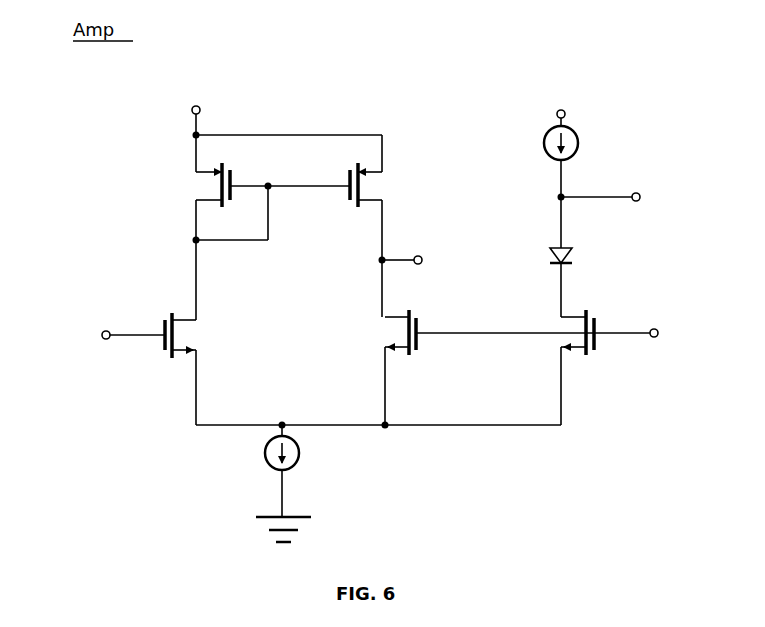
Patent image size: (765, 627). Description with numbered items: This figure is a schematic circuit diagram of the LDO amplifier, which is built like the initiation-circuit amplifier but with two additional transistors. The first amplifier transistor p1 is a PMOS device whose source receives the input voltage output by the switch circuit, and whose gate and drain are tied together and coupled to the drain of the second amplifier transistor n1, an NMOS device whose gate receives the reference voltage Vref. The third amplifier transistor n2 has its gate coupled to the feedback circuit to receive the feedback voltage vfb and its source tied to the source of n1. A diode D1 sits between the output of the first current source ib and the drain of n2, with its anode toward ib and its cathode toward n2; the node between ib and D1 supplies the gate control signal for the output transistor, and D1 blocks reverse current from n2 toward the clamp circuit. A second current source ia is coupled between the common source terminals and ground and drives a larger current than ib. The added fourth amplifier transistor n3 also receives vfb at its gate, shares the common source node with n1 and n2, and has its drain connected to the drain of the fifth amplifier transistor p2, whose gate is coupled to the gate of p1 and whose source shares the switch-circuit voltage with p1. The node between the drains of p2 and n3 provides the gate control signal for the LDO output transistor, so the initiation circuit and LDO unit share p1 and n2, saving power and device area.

The first amplifier transistor p1 is at (201, 185).
The fifth amplifier transistor p2 is at (383, 171).
The second amplifier transistor n1 is at (201, 336).
The third amplifier transistor n2 is at (559, 333).
The fourth amplifier transistor n3 is at (382, 333).
The diode D1 is at (592, 232).
The second current source ia is at (313, 483).
The first current source ib is at (580, 161).
The reference voltage Vref is at (94, 334).
The feedback voltage vfb is at (646, 334).